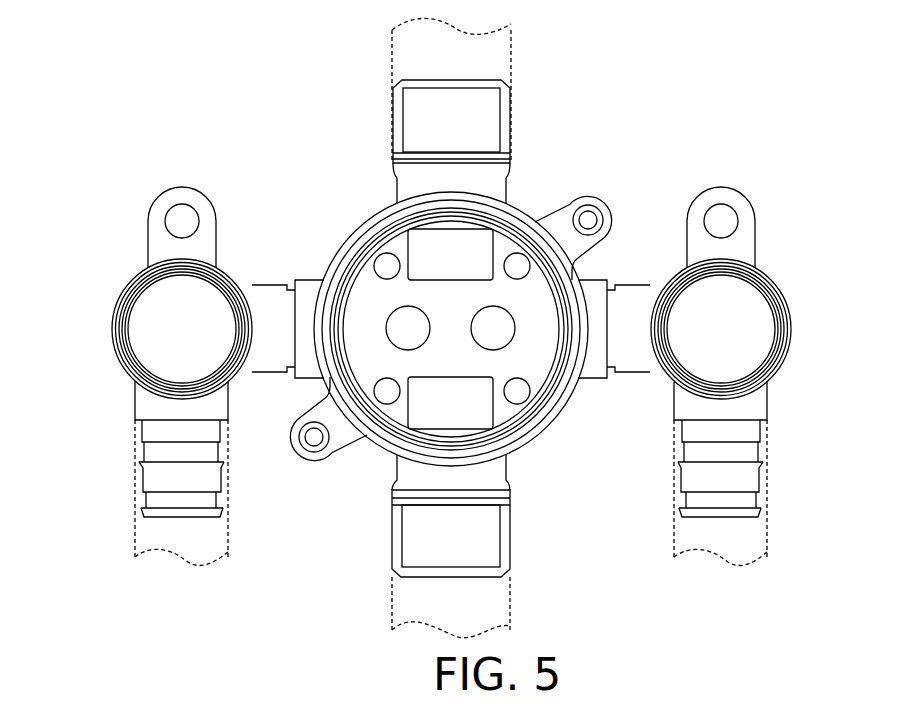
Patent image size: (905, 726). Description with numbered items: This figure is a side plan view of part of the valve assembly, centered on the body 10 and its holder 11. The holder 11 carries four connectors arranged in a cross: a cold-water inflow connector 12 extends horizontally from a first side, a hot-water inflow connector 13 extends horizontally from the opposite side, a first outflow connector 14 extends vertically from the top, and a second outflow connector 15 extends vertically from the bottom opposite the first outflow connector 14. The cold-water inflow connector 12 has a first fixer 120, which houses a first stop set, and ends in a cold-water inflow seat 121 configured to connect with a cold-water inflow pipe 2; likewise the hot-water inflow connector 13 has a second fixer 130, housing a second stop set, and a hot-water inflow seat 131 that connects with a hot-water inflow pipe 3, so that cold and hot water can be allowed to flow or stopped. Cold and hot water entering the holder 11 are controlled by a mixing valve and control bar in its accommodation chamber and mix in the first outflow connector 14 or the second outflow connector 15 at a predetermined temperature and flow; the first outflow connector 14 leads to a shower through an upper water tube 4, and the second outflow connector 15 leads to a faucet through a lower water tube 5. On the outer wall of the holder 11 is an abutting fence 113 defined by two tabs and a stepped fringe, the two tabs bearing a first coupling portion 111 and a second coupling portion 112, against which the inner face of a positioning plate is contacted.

The cold-water inflow pipe 2 is at (135, 493).
The hot-water inflow pipe 3 is at (767, 493).
The upper water tube 4 is at (392, 55).
The lower water tube 5 is at (392, 588).
The body 10 is at (562, 157).
The holder 11 is at (563, 400).
The first coupling portion 111 is at (588, 220).
The second coupling portion 112 is at (312, 438).
The abutting fence 113 is at (338, 440).
The cold-water inflow connector 12 is at (270, 283).
The hot-water inflow connector 13 is at (632, 283).
The first outflow connector 14 is at (510, 120).
The second outflow connector 15 is at (510, 530).
The first fixer 120 is at (130, 283).
The second fixer 130 is at (773, 295).
The cold-water inflow seat 121 is at (142, 430).
The hot-water inflow seat 131 is at (760, 430).